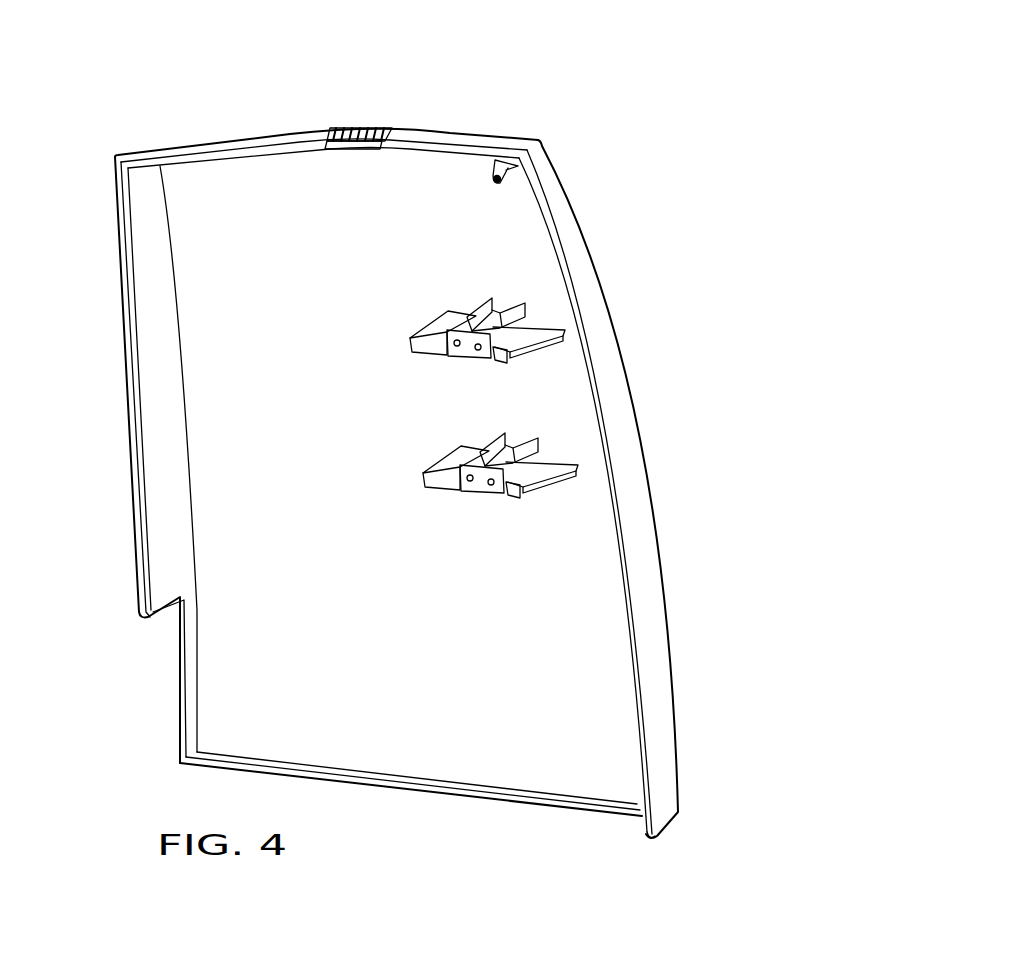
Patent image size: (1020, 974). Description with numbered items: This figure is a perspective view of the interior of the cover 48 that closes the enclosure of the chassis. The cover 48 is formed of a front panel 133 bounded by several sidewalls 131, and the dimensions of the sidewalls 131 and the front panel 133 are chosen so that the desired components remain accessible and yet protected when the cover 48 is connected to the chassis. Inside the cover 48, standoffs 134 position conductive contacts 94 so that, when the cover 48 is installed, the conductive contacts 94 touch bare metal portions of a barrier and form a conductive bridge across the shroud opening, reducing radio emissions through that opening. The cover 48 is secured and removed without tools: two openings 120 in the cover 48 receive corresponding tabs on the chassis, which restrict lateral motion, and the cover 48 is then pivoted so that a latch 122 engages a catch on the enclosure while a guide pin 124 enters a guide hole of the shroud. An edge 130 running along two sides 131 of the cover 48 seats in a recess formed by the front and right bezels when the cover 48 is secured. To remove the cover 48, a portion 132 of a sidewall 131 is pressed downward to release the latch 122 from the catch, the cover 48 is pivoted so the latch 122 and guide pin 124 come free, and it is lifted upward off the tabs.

The cover 48 is at (451, 103).
The sidewalls 131 is at (262, 136).
The portion of sidewall 132 is at (356, 128).
The latch 122 is at (353, 150).
The guide pin 124 is at (525, 170).
The edge 130 is at (572, 312).
The standoffs 134 is at (445, 325).
The conductive contacts 94 is at (432, 352).
The front panel 133 is at (217, 705).
The openings 120 is at (292, 760).